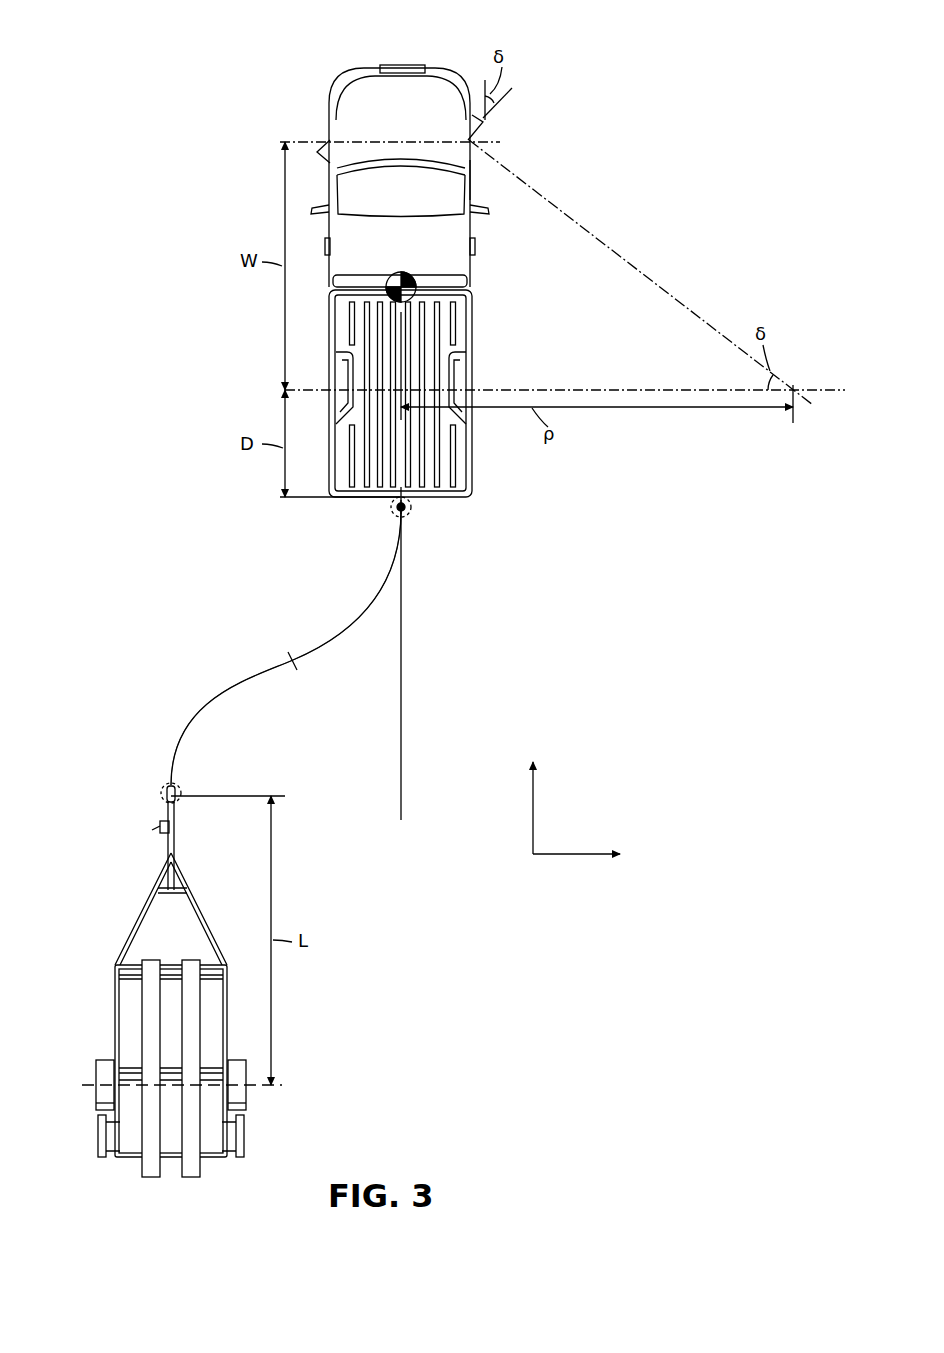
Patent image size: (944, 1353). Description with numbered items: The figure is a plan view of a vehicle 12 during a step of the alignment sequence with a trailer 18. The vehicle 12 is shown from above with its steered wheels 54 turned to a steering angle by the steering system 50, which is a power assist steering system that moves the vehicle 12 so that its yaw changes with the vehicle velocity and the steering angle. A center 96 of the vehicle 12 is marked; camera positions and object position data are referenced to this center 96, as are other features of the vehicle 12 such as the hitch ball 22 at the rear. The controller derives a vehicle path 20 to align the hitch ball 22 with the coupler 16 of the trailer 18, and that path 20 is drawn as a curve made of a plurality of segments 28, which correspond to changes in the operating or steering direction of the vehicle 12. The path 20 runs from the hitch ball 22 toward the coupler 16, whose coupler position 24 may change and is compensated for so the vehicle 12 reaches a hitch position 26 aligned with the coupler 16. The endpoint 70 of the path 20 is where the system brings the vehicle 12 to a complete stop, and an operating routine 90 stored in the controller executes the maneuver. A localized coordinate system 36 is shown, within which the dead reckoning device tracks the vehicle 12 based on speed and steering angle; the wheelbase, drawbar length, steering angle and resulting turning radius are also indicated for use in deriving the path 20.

The vehicle 12 is at (310, 68).
The steered wheels 54 is at (320, 147).
The steering system 50 is at (484, 176).
The center 96 is at (386, 302).
The hitch ball 22 is at (396, 508).
The endpoint 70 is at (410, 509).
The hitch position 26 is at (409, 519).
The segments 28 is at (352, 630).
The operating routine 90 is at (248, 620).
The vehicle path 20 is at (210, 665).
The coupler position 24 is at (182, 789).
The coupler 16 is at (178, 801).
The trailer 18 is at (110, 1008).
The localized coordinate system 36 is at (580, 875).